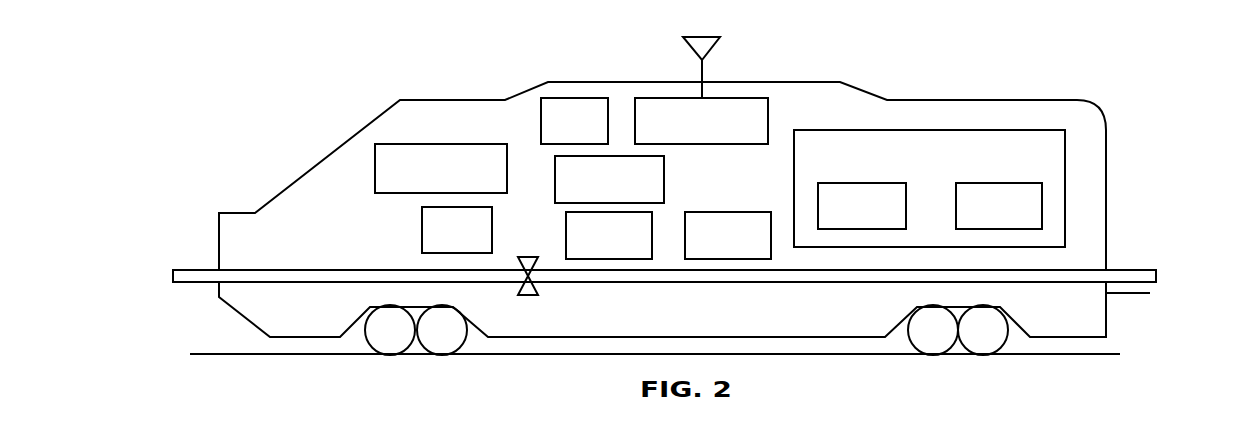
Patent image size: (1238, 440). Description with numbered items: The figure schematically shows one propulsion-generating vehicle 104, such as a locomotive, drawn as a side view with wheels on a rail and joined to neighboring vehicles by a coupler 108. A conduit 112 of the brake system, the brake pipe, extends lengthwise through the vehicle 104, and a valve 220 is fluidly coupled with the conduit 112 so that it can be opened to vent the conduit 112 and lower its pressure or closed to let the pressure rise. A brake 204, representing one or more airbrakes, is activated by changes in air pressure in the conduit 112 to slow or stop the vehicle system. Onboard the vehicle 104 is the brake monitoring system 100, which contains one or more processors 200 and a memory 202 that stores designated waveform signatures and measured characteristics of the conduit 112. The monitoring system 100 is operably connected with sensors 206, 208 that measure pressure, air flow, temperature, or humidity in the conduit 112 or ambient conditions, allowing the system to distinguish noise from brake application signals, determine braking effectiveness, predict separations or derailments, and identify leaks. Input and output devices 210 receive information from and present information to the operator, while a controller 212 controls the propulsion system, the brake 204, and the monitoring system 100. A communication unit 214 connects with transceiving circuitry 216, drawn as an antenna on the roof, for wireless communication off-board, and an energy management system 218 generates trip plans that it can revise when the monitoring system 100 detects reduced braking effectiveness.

The brake monitoring system 100 is at (913, 166).
The propulsion-generating vehicle 104 is at (1030, 100).
The coupler 108 is at (1147, 295).
The conduit 112 is at (1149, 268).
The processor 200 is at (843, 218).
The memory 202 is at (980, 218).
The brake 204 is at (438, 243).
The sensor 206 is at (590, 248).
The sensor 208 is at (709, 248).
The input and/or output device 210 is at (422, 182).
The controller 212 is at (590, 192).
The communication unit 214 is at (682, 133).
The transceiving circuitry 216 is at (715, 47).
The energy management system 218 is at (555, 133).
The valve 220 is at (538, 290).